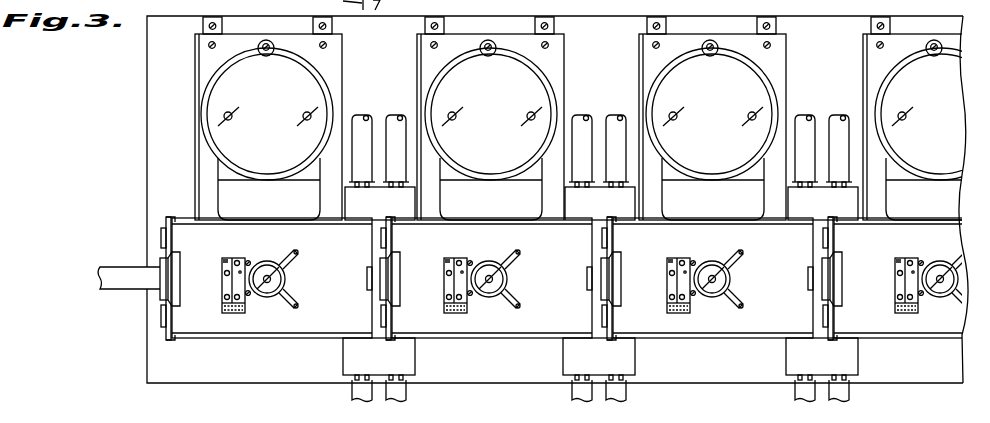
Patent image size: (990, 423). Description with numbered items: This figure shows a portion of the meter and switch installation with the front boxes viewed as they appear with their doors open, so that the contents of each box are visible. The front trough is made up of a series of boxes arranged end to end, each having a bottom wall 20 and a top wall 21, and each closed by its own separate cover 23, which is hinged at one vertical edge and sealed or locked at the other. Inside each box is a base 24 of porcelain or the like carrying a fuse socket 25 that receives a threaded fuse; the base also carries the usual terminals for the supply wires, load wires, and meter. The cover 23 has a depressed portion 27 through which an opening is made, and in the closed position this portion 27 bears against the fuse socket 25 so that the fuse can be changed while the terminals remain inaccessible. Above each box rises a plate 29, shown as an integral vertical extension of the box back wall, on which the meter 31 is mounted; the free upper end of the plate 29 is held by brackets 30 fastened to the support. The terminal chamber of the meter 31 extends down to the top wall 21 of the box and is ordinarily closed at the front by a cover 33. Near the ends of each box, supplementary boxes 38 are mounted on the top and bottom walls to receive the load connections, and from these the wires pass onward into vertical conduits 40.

The bottom wall 20 is at (312, 336).
The top wall 21 is at (320, 224).
The cover 23 is at (162, 297).
The base 24 is at (247, 262).
The fuse socket 25 is at (290, 279).
The depressed portion 27 is at (180, 265).
The plate 29 is at (212, 58).
The brackets 30 is at (203, 25).
The meter 31 is at (267, 114).
The cover 33 is at (262, 197).
The supplementary boxes 38 is at (379, 281).
The vertical conduits 40 is at (393, 117).